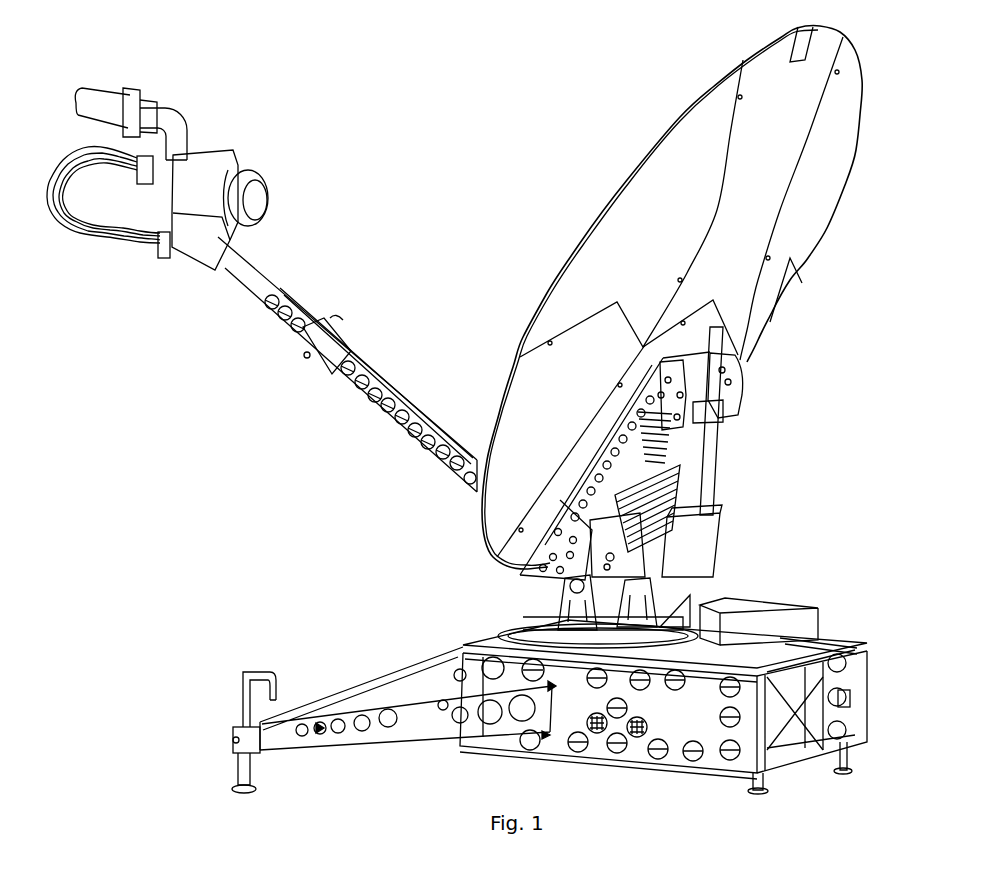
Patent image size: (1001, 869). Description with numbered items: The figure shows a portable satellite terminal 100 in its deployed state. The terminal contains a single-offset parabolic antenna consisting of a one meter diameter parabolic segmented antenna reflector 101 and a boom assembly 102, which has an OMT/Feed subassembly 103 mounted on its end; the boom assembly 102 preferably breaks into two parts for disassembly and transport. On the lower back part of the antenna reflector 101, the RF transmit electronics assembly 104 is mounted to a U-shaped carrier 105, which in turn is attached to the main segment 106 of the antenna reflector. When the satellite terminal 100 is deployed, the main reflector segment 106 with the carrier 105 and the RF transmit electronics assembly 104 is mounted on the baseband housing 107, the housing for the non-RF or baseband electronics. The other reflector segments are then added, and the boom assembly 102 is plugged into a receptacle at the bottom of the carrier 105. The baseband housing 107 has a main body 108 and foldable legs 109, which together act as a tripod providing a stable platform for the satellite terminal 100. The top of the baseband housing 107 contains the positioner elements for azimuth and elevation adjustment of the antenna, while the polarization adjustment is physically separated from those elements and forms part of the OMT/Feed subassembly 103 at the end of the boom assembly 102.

The satellite terminal 100 is at (480, 196).
The parabolic segmented antenna reflector 101 is at (672, 297).
The boom assembly 102 is at (347, 364).
The OMT/Feed subassembly 103 is at (247, 158).
The RF transmit electronics assembly 104 is at (686, 476).
The U-shaped carrier 105 is at (565, 562).
The main segment of the antenna reflector 106 is at (696, 342).
The baseband housing 107 is at (452, 645).
The main body 108 is at (663, 696).
The foldable legs 109 is at (262, 723).